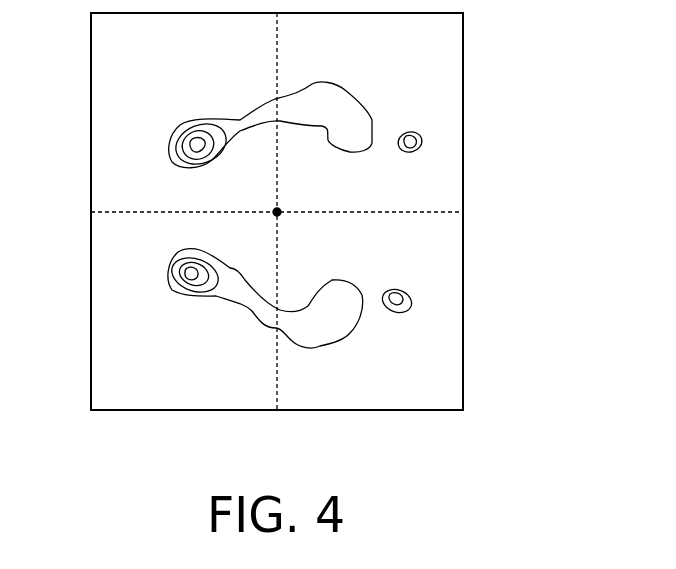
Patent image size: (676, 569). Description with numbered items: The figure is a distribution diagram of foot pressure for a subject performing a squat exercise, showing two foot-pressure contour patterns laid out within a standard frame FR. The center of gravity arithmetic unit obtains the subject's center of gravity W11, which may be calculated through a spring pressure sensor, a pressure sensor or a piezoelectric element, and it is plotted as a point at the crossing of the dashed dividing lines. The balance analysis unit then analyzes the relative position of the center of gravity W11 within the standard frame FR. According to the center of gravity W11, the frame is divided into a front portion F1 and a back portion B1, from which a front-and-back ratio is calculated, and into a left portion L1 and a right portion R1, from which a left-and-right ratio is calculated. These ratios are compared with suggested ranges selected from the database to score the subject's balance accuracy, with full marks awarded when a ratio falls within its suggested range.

The standard frame FR is at (463, 323).
The center of gravity W11 is at (277, 212).
The left portion L1 is at (88, 13).
The right portion R1 is at (88, 212).
The back portion B1 is at (277, 412).
The front portion F1 is at (463, 412).